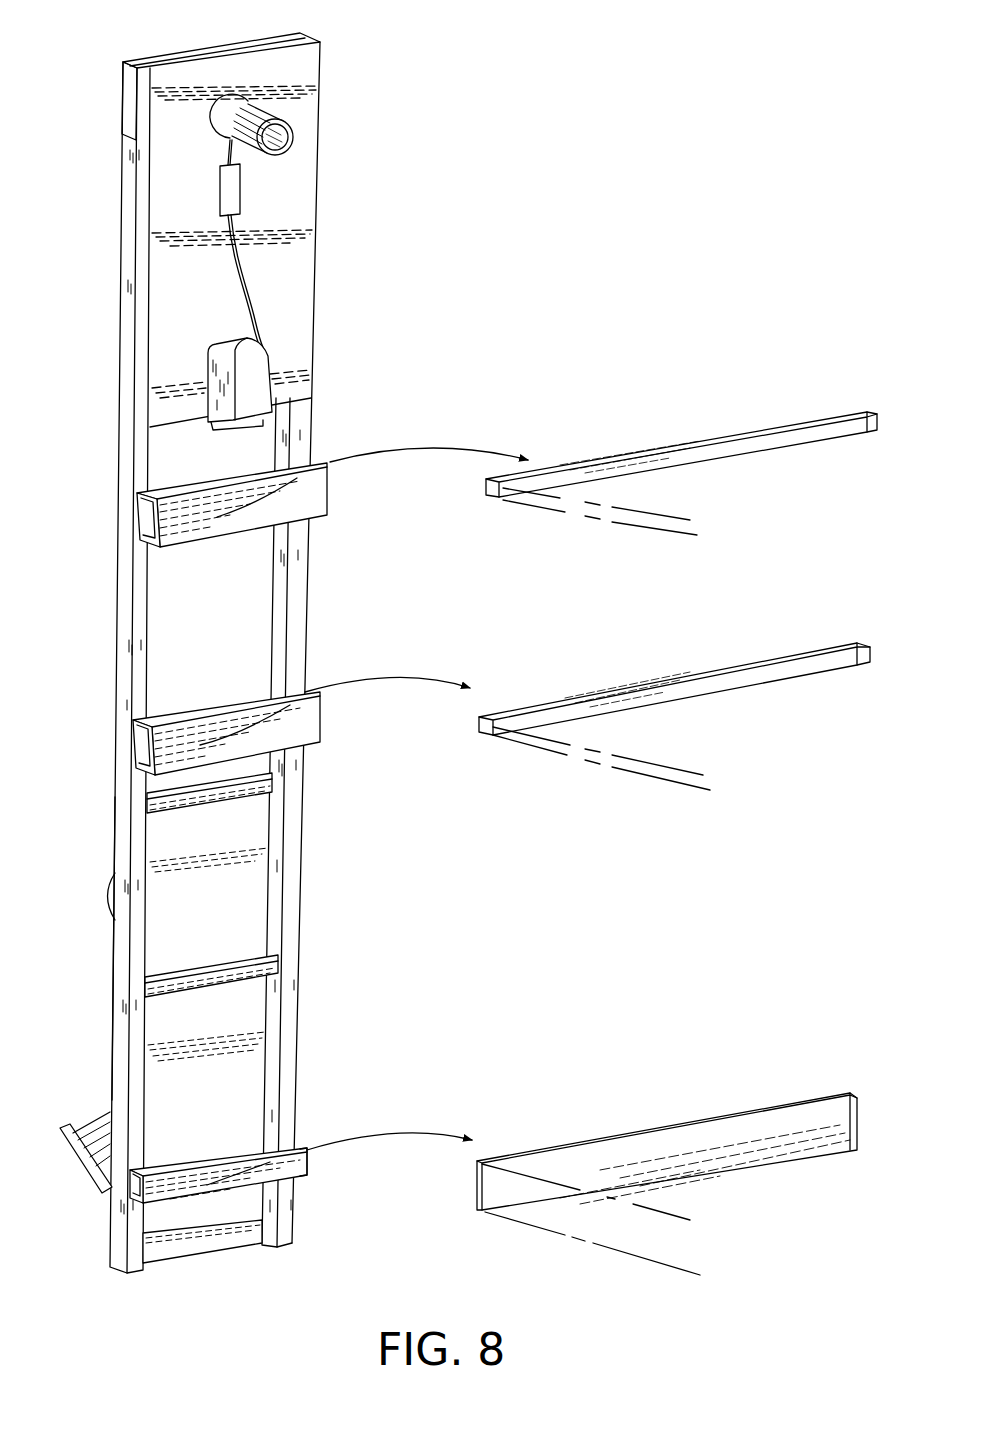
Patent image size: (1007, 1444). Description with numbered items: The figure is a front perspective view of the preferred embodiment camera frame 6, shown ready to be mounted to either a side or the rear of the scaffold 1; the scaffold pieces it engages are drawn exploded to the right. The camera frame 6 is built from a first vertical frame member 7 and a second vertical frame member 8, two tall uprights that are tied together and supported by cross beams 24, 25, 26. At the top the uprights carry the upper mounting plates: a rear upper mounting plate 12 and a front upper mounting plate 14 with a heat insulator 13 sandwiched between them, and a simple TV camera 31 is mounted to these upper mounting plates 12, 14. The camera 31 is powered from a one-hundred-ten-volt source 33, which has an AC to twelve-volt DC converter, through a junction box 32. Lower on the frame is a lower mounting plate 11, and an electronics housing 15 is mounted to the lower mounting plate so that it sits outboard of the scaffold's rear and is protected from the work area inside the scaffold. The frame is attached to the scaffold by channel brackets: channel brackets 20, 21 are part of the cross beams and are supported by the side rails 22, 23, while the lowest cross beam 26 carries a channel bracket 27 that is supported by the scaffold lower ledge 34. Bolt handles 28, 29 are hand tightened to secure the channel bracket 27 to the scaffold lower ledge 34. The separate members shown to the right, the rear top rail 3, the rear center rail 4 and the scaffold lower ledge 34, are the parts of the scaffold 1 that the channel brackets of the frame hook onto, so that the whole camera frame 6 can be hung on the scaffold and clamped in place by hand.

The scaffold 1 is at (866, 402).
The rear top rail 3 is at (716, 438).
The rear center rail 4 is at (676, 680).
The camera frame 6 is at (328, 43).
The first vertical frame member 7 is at (297, 617).
The second vertical frame member 8 is at (140, 647).
The lower mounting plate 11 is at (223, 1122).
The upper mounting plate 12 is at (132, 72).
The heat insulator 13 is at (192, 56).
The front upper mounting plate 14 is at (303, 285).
The electronics housing 15 is at (98, 1147).
The channel bracket 20 is at (317, 490).
The channel bracket 21 is at (313, 720).
The side rail 22 is at (672, 515).
The side rail 23 is at (656, 762).
The cross beam 24 is at (253, 788).
The cross beam 25 is at (255, 970).
The cross beam 26 is at (253, 1152).
The channel bracket 27 is at (270, 1175).
The bolt handle 28 is at (167, 1263).
The bolt handle 29 is at (308, 1167).
The TV camera 31 is at (290, 97).
The junction box 32 is at (233, 187).
The 110V source 33 is at (255, 400).
The scaffold lower ledge 34 is at (743, 1140).